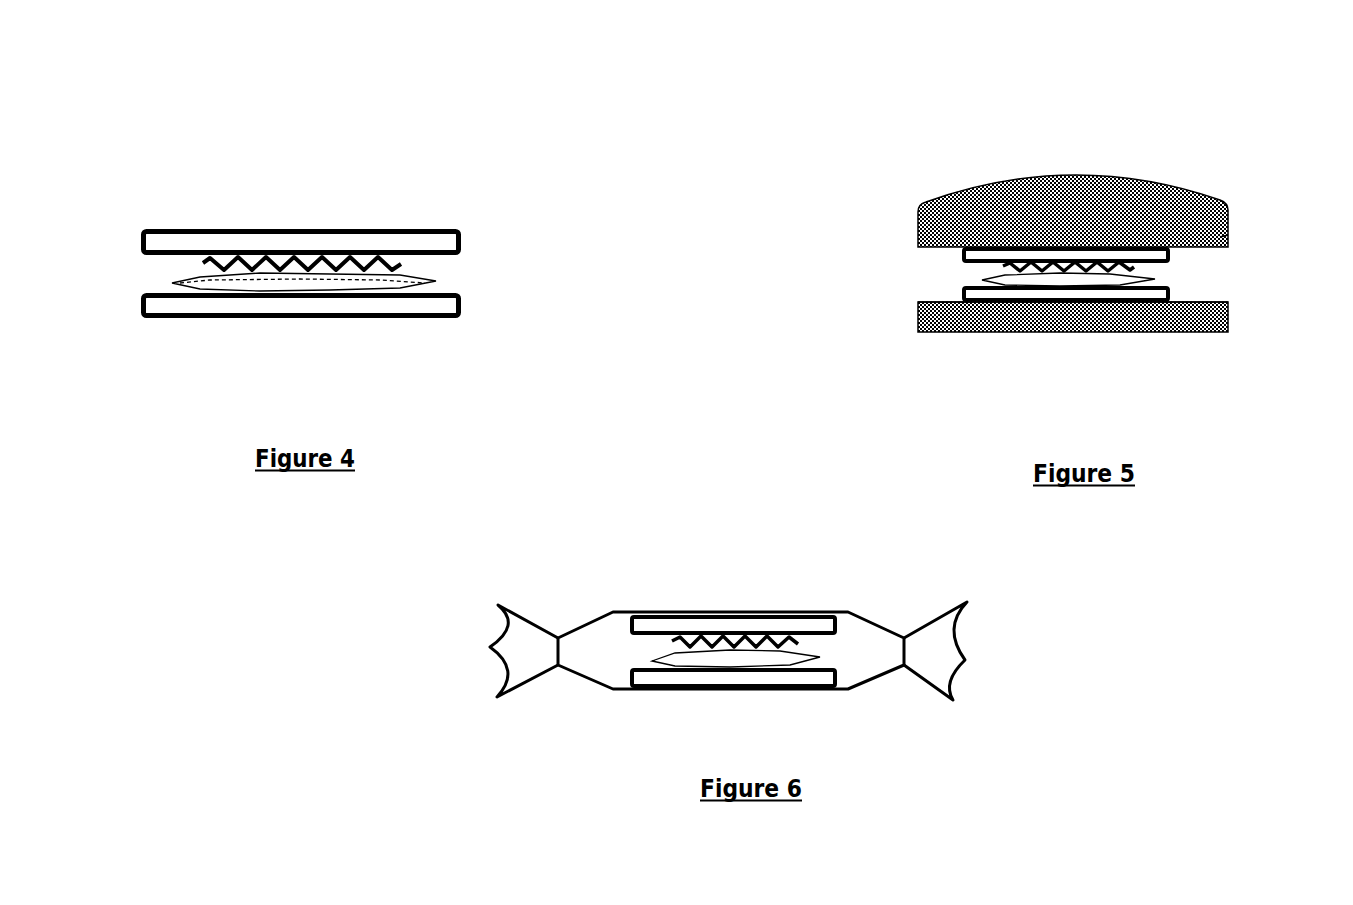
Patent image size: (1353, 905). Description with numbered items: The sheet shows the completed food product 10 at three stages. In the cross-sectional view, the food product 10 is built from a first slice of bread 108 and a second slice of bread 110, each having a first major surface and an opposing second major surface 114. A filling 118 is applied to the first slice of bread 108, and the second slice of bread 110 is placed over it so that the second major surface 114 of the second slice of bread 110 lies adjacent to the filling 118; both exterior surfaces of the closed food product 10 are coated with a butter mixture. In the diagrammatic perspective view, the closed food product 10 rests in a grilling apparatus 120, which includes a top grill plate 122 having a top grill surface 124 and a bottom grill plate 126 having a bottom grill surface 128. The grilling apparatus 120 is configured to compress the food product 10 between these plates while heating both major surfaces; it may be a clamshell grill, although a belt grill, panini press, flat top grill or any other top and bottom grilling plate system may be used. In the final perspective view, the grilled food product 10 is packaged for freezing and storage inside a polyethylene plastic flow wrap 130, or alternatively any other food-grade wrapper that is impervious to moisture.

In FIG. 4, the food product 10 is at (140, 202).
In FIG. 5, the food product 10 is at (1172, 272).
In FIG. 6, the food product 10 is at (835, 652).
In FIG. 4, the first slice of bread 108 is at (435, 307).
In FIG. 4, the second slice of bread 110 is at (430, 248).
In FIG. 4, the second major surface 114 is at (158, 255).
In FIG. 4, the filling 118 is at (405, 266).
In FIG. 5, the grilling apparatus 120 is at (892, 211).
In FIG. 5, the top grill plate 122 is at (1102, 197).
In FIG. 5, the top grill surface 124 is at (1220, 237).
In FIG. 5, the bottom grill plate 126 is at (1048, 315).
In FIG. 5, the bottom grill surface 128 is at (1198, 303).
In FIG. 6, the polyethylene plastic flow wrap 130 is at (585, 632).